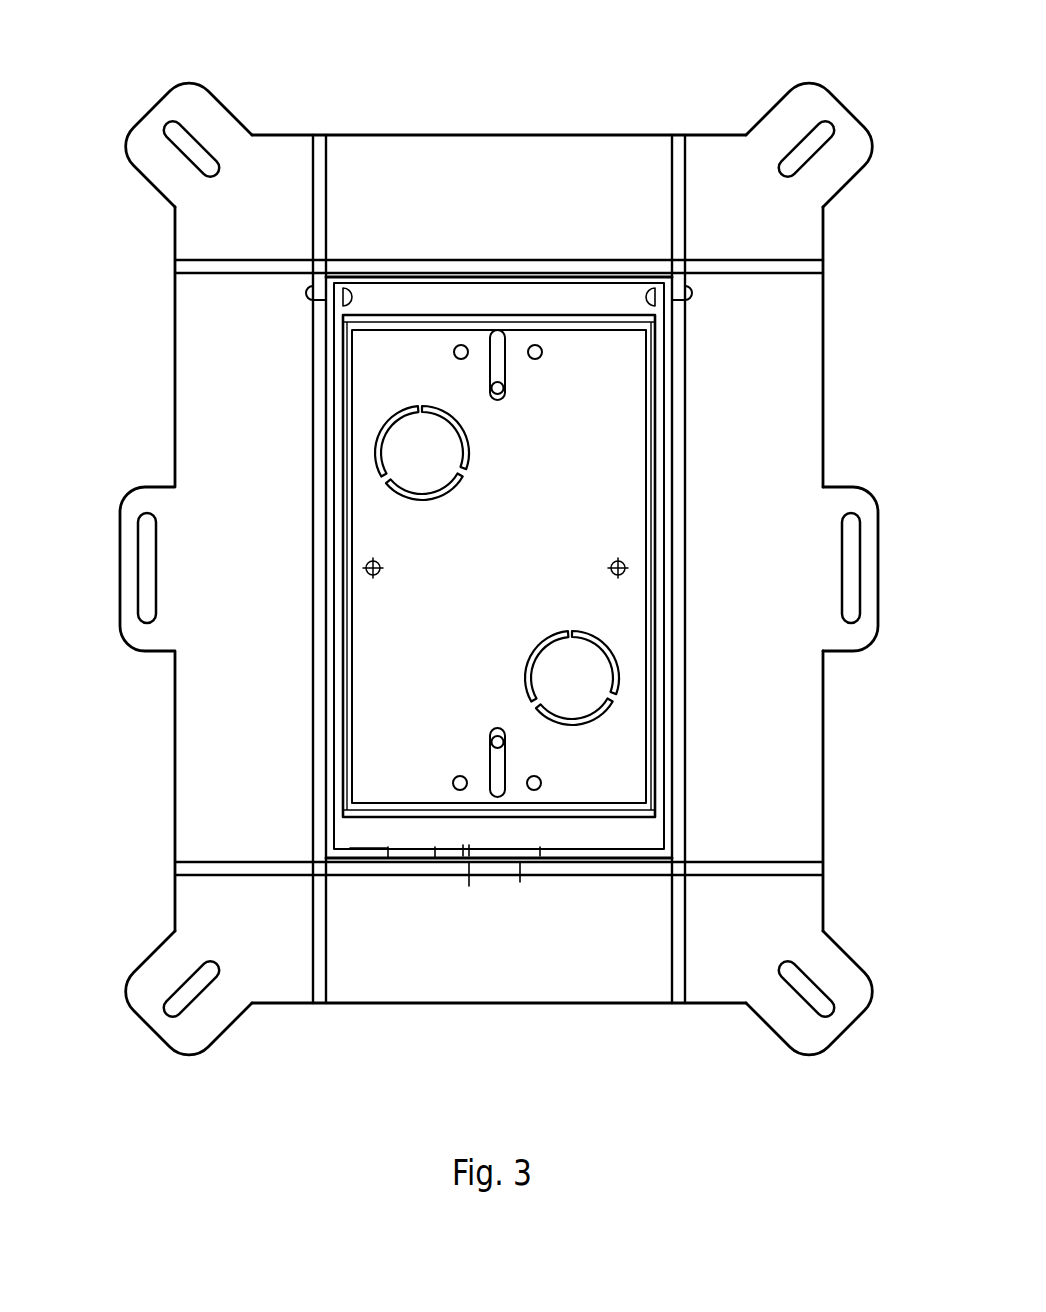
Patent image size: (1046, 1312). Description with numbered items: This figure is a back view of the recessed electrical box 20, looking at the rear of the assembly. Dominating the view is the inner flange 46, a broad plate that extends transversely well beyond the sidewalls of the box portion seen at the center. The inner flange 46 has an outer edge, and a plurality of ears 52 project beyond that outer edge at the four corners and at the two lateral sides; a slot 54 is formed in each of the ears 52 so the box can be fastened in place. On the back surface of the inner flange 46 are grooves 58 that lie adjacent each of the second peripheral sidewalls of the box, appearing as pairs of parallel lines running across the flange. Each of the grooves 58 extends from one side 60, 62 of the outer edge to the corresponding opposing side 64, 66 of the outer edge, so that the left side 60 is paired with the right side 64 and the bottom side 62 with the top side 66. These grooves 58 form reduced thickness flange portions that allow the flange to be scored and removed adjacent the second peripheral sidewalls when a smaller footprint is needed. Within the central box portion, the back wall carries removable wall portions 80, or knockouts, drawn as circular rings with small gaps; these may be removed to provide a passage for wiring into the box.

The recessed electrical box 20 is at (338, 101).
The inner flange 46 is at (773, 428).
The ears 52 is at (842, 190).
The slot 54 is at (825, 133).
The grooves 58 is at (178, 272).
The side of the outer edge 60 is at (173, 755).
The side of the outer edge 62 is at (493, 1004).
The opposing side of the outer edge 64 is at (823, 378).
The opposing side of the outer edge 66 is at (498, 135).
The removable wall portions 80 is at (418, 477).